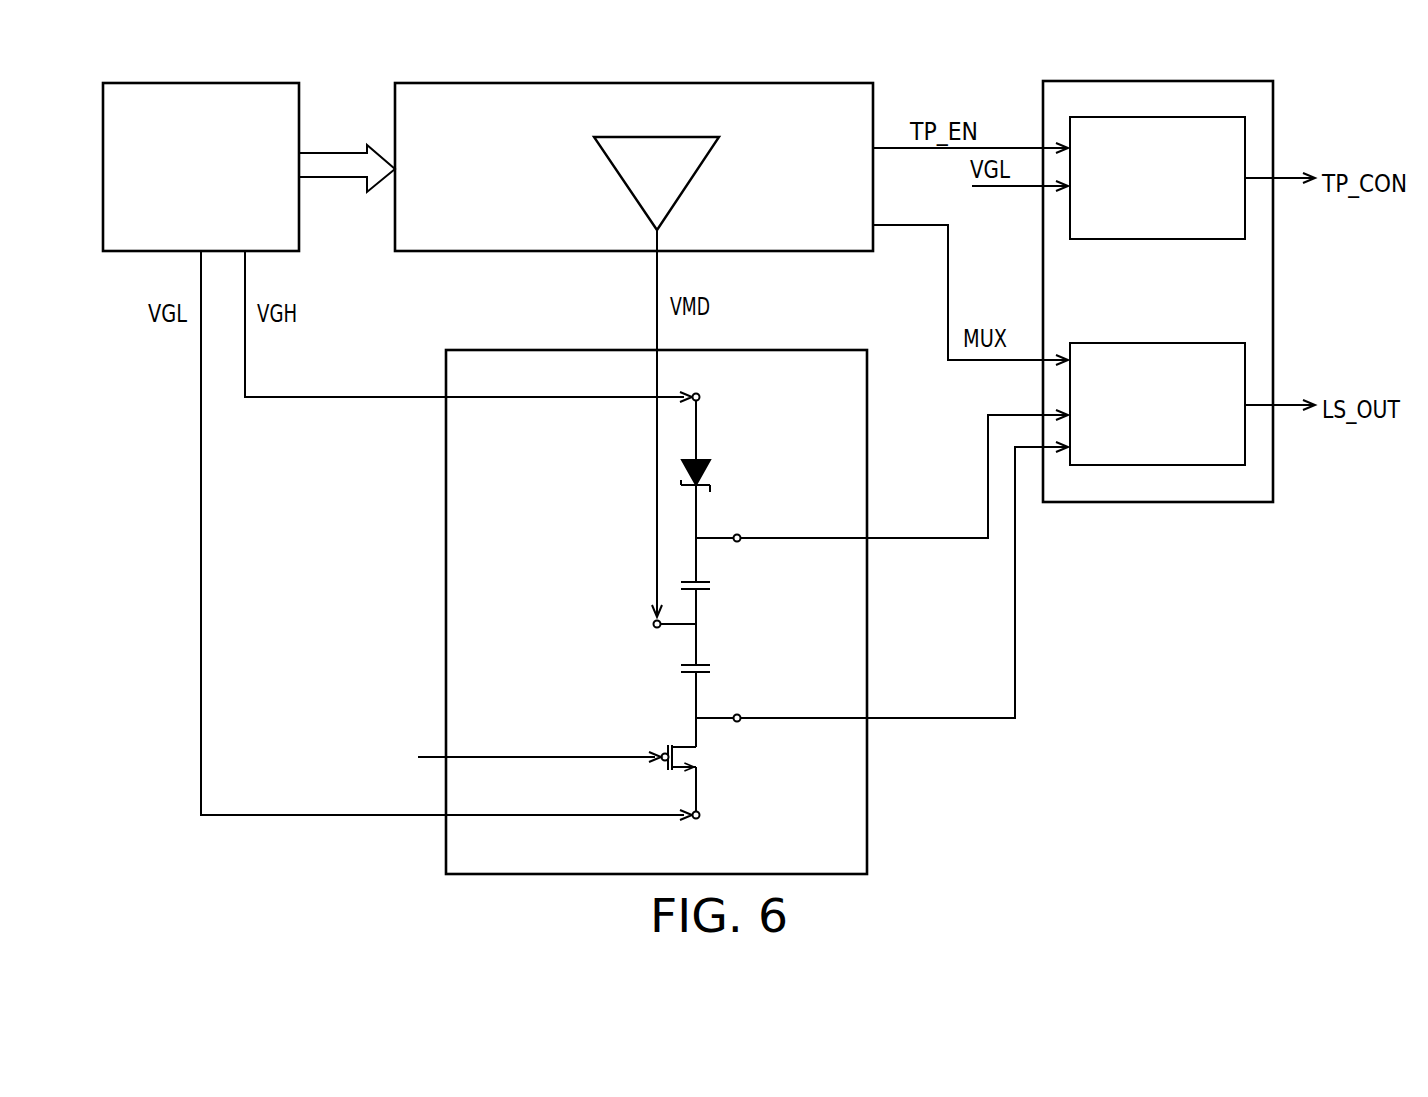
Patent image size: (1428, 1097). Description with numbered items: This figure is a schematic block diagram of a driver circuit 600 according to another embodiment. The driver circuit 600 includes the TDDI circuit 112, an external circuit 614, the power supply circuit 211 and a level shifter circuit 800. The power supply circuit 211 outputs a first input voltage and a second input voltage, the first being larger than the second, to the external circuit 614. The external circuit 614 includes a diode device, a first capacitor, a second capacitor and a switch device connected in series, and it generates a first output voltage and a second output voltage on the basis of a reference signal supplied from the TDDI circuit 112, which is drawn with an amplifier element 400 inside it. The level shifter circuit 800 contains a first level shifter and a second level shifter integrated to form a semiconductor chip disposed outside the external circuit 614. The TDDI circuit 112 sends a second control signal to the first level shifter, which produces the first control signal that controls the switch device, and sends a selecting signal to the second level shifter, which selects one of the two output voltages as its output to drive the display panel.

The power supply circuit 211 is at (103, 160).
The TDDI circuit 112 is at (873, 102).
The operational amplifier 400 is at (693, 178).
The external circuit 614 is at (446, 670).
The level shifter circuit 800 is at (1201, 320).
The driver circuit 600 is at (1334, 879).